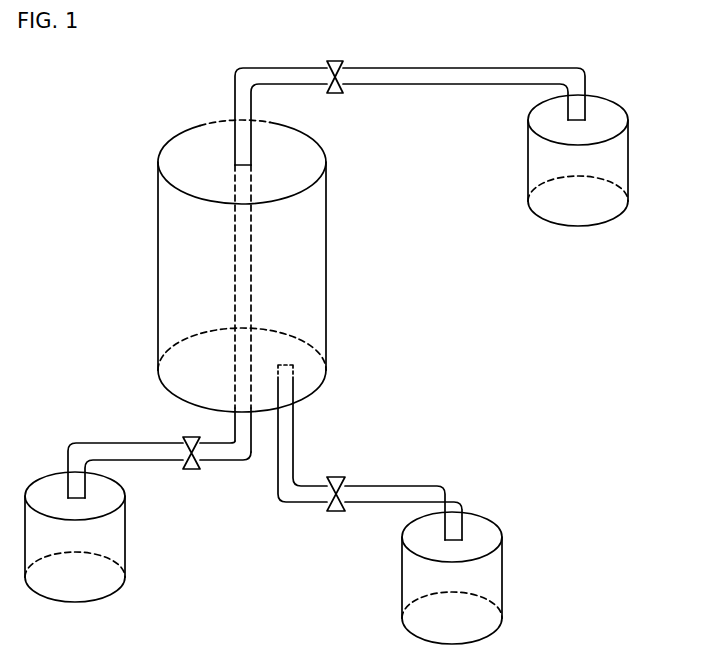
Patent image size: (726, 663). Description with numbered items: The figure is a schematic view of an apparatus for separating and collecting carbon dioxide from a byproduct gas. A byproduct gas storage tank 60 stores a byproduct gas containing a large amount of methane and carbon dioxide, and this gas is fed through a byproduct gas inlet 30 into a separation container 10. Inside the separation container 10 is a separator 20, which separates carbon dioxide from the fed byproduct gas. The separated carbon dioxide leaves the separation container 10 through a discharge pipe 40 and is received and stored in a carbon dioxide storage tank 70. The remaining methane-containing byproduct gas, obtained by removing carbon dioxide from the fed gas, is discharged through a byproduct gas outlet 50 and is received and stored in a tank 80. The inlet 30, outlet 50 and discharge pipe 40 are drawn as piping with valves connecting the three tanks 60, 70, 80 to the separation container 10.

The separation container 10 is at (312, 235).
The separator 20 is at (240, 303).
The byproduct gas inlet 30 is at (240, 433).
The discharge pipe 40 is at (288, 432).
The byproduct gas outlet 50 is at (240, 131).
The byproduct gas storage tank 60 is at (88, 572).
The carbon dioxide storage tank 70 is at (470, 603).
The tank 80 is at (578, 192).